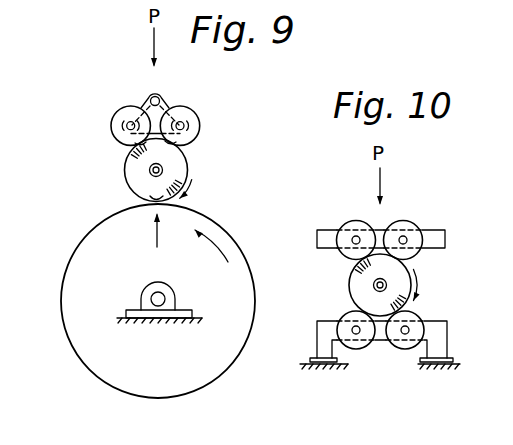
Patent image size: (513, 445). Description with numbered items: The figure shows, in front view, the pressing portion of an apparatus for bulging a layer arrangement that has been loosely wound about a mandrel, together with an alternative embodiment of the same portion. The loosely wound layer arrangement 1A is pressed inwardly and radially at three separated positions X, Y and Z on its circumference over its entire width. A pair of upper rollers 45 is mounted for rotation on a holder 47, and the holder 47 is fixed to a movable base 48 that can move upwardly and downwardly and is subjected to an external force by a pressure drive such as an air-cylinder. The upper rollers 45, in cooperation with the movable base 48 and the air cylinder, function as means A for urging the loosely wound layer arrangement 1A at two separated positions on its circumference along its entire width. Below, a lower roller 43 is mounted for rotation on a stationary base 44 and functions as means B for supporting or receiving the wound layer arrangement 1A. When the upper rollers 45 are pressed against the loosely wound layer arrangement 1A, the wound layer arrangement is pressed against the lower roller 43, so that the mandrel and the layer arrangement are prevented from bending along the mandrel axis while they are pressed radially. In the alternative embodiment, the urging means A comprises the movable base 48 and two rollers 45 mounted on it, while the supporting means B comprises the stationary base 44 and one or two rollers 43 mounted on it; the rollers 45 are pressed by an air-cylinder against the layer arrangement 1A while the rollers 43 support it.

In FIG. 9, the loosely wound layer arrangement 1A is at (190, 172).
In FIG. 10, the loosely wound layer arrangement 1A is at (348, 282).
In FIG. 9, the lower roller 43 is at (78, 247).
In FIG. 10, the lower roller 43 is at (365, 347).
In FIG. 9, the stationary base 44 is at (147, 319).
In FIG. 10, the stationary base 44 is at (447, 338).
In FIG. 9, the upper rollers 45 is at (201, 121).
In FIG. 10, the upper rollers 45 is at (413, 223).
In FIG. 9, the holder 47 is at (165, 102).
In FIG. 10, the movable base 48 is at (446, 237).
In FIG. 9, the urging means A is at (137, 100).
In FIG. 10, the urging means A is at (316, 237).
In FIG. 10, the supporting means B is at (317, 338).
In FIG. 9, the pressing position X is at (139, 196).
In FIG. 9, the pressing position Y is at (123, 147).
In FIG. 9, the pressing position Z is at (190, 144).